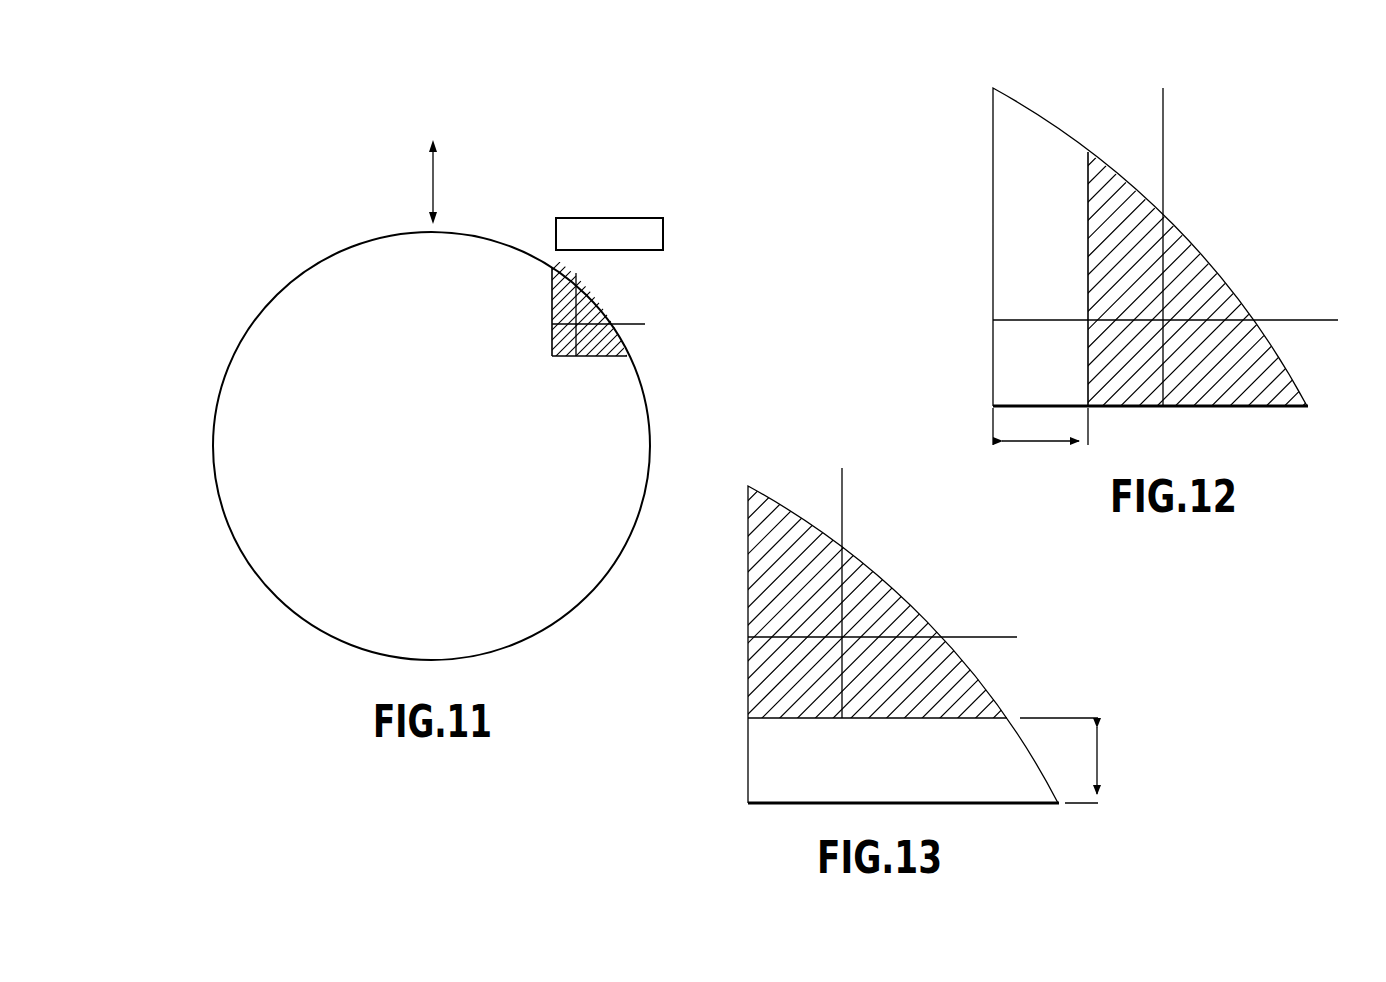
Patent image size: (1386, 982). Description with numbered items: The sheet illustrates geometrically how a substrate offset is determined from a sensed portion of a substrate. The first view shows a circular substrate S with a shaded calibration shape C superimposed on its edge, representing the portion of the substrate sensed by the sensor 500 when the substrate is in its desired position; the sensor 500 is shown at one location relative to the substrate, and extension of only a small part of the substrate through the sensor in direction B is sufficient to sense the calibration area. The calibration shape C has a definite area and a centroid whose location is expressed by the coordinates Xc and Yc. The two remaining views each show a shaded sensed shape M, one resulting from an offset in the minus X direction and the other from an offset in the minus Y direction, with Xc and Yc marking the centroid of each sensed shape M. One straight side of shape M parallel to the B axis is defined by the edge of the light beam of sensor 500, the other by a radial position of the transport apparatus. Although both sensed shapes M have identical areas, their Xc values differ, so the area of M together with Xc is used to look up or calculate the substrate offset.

In FIG. 11, the sensor 500 is at (637, 218).
In FIG. 11, the substrate S is at (430, 462).
In FIG. 11, the direction B is at (445, 182).
In FIG. 11, the calibration shape C is at (585, 357).
In FIG. 12, the calibration shape C is at (925, 275).
In FIG. 13, the calibration shape C is at (678, 668).
In FIG. 12, the sensed shape M is at (1198, 253).
In FIG. 13, the sensed shape M is at (893, 588).
In FIG. 11, the centroid X coordinate Xc is at (576, 283).
In FIG. 12, the centroid X coordinate Xc is at (1163, 111).
In FIG. 13, the centroid X coordinate Xc is at (842, 482).
In FIG. 11, the centroid Y coordinate Yc is at (671, 307).
In FIG. 12, the centroid Y coordinate Yc is at (1318, 320).
In FIG. 13, the centroid Y coordinate Yc is at (997, 637).